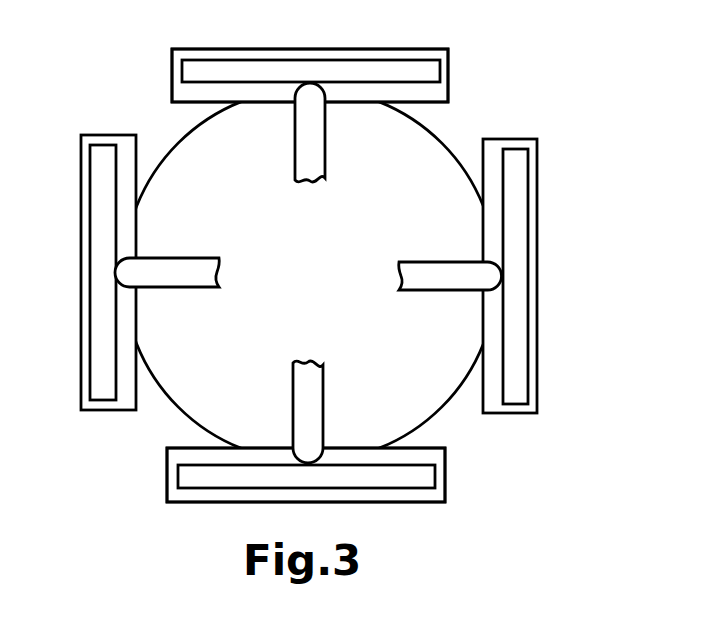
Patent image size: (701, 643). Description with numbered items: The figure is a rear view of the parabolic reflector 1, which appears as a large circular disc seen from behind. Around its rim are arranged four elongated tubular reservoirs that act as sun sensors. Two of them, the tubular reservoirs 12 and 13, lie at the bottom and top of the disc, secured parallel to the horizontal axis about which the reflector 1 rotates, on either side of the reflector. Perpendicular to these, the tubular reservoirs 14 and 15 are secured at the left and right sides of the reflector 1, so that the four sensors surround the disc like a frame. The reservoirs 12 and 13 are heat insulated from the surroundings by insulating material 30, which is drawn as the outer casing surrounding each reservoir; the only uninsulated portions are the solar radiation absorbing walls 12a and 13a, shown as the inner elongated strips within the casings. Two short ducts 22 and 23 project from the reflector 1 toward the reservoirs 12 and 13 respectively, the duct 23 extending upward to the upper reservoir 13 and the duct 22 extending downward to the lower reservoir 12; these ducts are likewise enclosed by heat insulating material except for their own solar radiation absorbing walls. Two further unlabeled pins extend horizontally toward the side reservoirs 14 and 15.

The parabolic reflector 1 is at (403, 167).
The tubular reservoir 12 is at (306, 497).
The solar radiation absorbing wall 12a is at (266, 475).
The tubular reservoir 13 is at (310, 57).
The solar radiation absorbing wall 13a is at (289, 72).
The tubular reservoir 14 is at (73, 242).
The tubular reservoir 15 is at (548, 241).
The duct 22 is at (281, 399).
The duct 23 is at (283, 157).
The insulating material 30 is at (238, 53).